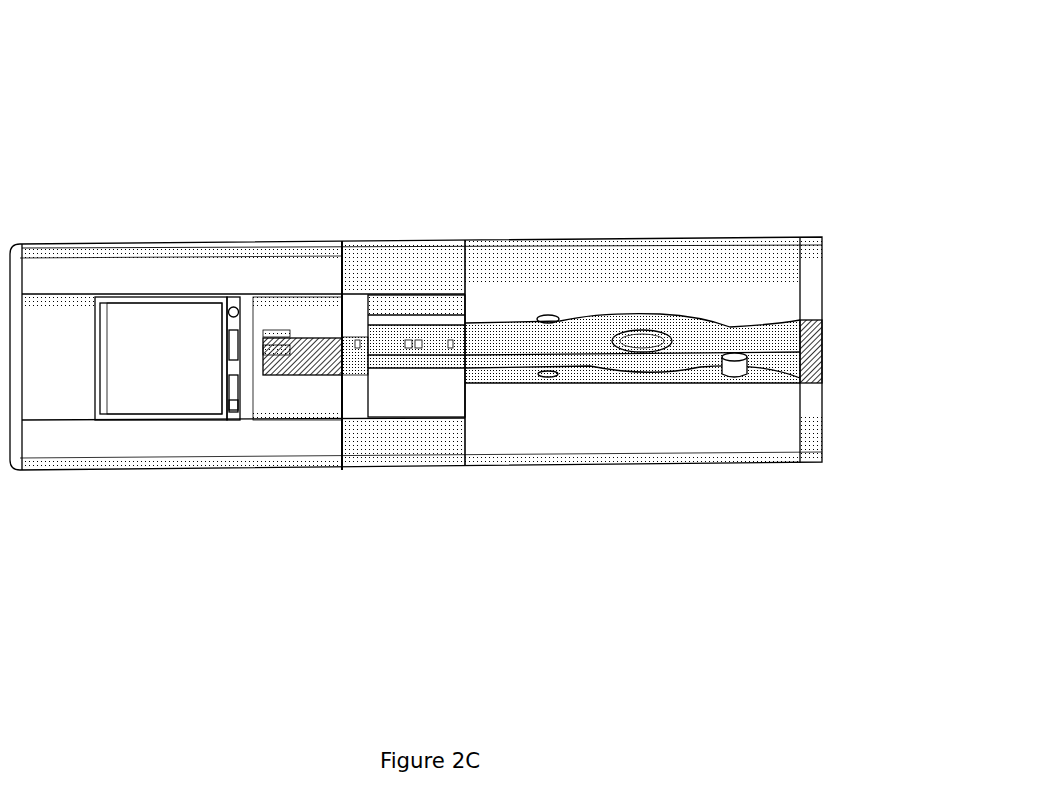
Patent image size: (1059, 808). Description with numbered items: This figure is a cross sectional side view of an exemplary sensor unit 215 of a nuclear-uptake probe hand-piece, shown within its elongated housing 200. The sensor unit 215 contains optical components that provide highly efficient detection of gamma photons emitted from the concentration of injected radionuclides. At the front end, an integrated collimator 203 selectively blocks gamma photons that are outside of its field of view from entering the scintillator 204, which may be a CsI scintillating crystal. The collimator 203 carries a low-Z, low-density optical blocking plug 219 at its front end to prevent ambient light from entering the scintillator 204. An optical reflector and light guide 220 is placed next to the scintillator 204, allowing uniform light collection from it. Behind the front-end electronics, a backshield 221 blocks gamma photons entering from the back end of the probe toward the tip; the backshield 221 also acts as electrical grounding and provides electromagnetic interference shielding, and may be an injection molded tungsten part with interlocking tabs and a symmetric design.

The device housing 200 is at (15, 462).
The integrated collimator 203 is at (45, 247).
The scintillator 204 is at (138, 327).
The sensor unit 215 is at (663, 98).
The optical blocking plug 219 is at (63, 393).
The optical reflector and light guide 220 is at (230, 417).
The backshield 221 is at (615, 275).